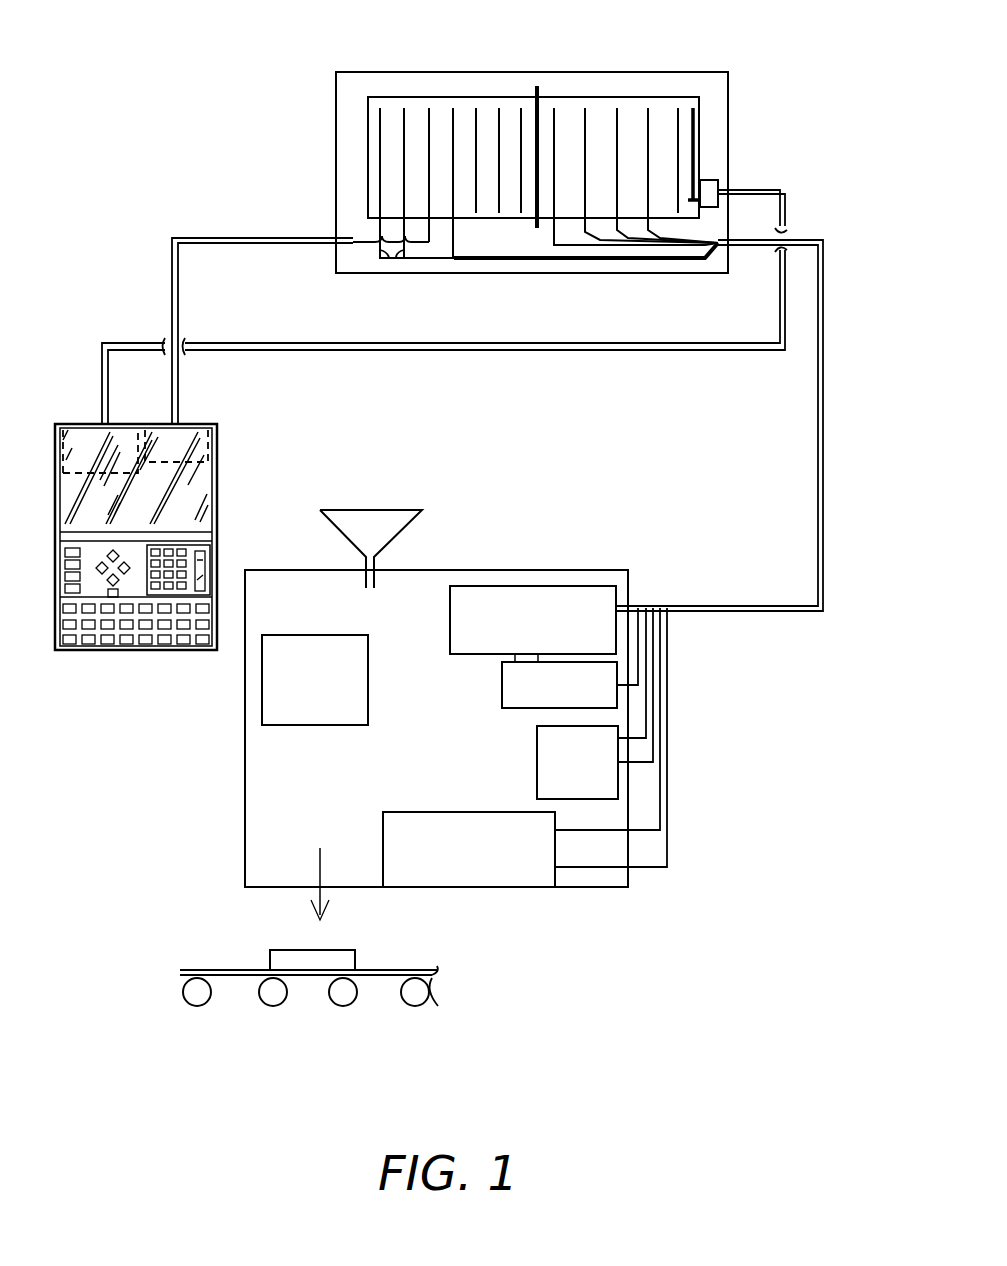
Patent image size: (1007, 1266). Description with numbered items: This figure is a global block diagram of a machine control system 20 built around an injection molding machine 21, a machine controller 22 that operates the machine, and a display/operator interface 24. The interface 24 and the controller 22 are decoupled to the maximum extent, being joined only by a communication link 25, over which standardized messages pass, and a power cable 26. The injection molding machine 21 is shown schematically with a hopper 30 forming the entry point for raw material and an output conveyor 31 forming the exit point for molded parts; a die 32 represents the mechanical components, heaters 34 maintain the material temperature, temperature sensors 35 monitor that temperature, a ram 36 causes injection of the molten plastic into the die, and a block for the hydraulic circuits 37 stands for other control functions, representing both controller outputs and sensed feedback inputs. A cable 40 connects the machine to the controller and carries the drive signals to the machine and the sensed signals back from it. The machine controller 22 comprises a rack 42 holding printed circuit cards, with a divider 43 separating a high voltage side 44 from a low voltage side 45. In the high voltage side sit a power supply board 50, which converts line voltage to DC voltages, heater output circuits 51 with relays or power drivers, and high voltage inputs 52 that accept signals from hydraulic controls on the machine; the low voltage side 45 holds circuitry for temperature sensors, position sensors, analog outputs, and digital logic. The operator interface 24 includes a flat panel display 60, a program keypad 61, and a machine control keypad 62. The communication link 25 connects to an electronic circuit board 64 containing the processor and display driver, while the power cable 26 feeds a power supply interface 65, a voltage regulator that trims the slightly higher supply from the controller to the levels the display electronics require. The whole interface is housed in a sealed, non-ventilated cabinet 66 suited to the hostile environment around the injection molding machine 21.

The system architecture 20 is at (525, 464).
The injection molding machine 21 is at (522, 568).
The machine controller 22 is at (488, 72).
The operator interface 24 is at (222, 438).
The communication link 25 is at (235, 238).
The power cable 26 is at (255, 343).
The hopper 30 is at (393, 510).
The output conveyor 31 is at (378, 953).
The die 32 is at (313, 726).
The heaters 34 is at (450, 621).
The temperature sensors 35 is at (502, 688).
The ram 36 is at (537, 758).
The hydraulic circuits 37 is at (416, 812).
The cable 40 is at (825, 390).
The rack 42 is at (700, 108).
The divider 43 is at (537, 86).
The high voltage side 44 is at (660, 98).
The low voltage side 45 is at (440, 103).
The power supply board 50 is at (694, 145).
The heater output circuits 51 is at (556, 108).
The high voltage inputs 52 is at (615, 108).
The flat panel display 60 is at (206, 472).
The program keypad 61 is at (215, 553).
The machine control keypad 62 is at (158, 655).
The electronic circuit board 64 is at (207, 436).
The power supply interface 65 is at (97, 438).
The cabinet 66 is at (213, 455).